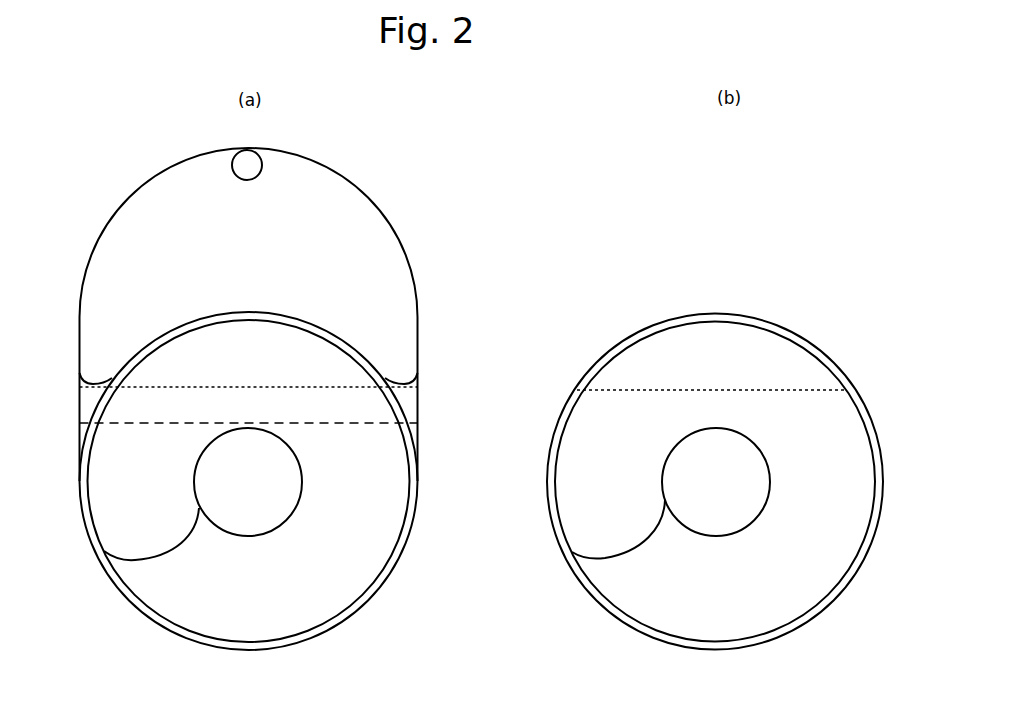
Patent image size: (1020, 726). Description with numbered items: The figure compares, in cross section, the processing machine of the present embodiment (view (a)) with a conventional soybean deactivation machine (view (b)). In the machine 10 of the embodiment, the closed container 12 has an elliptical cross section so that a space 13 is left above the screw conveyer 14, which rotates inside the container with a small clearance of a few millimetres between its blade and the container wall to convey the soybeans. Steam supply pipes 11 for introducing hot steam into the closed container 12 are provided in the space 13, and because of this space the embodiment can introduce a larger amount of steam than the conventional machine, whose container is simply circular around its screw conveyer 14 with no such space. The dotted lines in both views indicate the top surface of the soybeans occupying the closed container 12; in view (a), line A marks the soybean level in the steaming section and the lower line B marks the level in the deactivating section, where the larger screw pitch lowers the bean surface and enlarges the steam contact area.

The packaging bag body 10 is at (95, 388).
The steam supply pipe 11 is at (260, 157).
The closed container 12 is at (630, 333).
The space 13 is at (250, 278).
The screw conveyer 14 is at (623, 503).